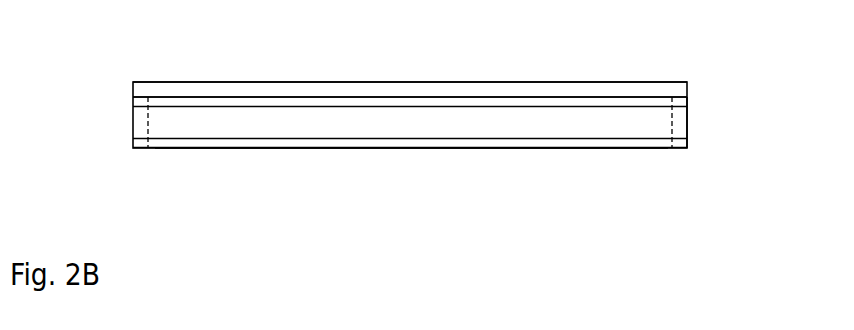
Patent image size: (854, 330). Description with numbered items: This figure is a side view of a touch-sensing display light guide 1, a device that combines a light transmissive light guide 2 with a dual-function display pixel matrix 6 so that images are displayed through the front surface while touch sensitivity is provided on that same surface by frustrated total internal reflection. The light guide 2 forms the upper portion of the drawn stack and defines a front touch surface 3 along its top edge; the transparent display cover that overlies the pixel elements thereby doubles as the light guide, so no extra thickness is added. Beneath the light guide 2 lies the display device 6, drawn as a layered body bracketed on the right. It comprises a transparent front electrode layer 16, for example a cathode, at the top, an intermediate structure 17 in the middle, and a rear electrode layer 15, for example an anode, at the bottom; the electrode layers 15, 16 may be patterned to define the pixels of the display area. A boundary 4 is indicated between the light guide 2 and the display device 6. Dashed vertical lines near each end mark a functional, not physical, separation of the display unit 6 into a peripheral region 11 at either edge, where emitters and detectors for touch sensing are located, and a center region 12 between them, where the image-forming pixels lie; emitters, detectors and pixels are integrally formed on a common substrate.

The touch-sensing display light guide 1 is at (688, 67).
The light guide 2 is at (543, 92).
The front touch surface 3 is at (328, 81).
The interface 4 is at (415, 103).
The display pixel matrix 6 is at (698, 97).
The peripheral region 11 is at (152, 163).
The center region 12 is at (668, 163).
The rear electrode 15 is at (163, 143).
The front electrode 16 is at (166, 102).
The intermediate structure 17 is at (163, 122).